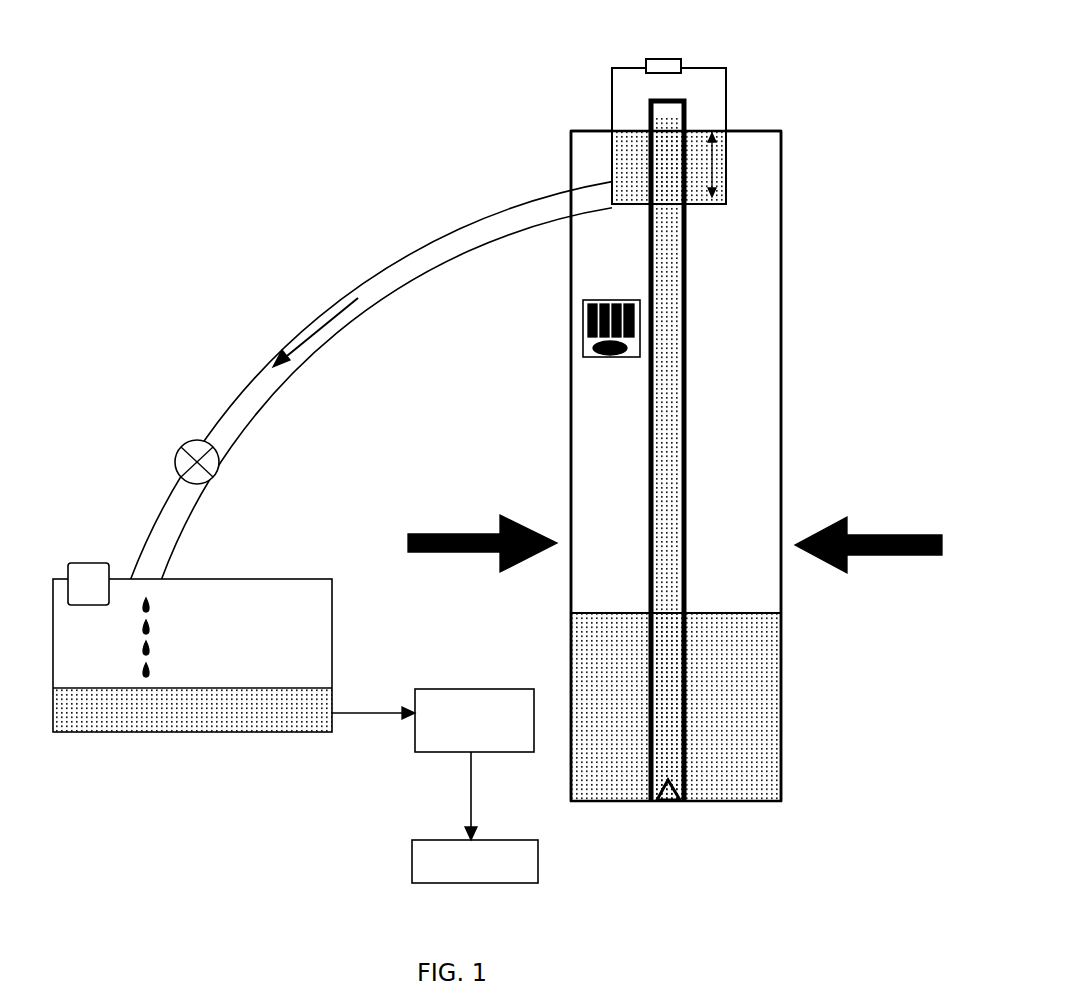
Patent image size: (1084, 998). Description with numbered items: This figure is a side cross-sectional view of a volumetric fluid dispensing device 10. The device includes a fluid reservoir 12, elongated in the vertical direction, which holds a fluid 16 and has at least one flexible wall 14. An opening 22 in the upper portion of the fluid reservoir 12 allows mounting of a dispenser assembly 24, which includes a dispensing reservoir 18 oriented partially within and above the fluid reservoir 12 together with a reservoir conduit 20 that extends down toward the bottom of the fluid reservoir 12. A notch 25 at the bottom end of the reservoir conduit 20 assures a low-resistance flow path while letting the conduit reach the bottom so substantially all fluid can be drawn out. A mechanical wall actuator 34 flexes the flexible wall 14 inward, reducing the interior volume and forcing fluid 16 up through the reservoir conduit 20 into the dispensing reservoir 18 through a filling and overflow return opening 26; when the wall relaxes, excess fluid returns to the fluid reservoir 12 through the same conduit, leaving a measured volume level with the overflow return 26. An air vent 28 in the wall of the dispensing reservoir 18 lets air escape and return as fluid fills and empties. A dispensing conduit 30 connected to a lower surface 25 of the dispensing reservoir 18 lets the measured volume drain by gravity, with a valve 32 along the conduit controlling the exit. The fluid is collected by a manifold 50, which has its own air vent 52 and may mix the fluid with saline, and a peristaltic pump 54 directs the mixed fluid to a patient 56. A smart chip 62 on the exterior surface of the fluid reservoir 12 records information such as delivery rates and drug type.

The volumetric fluid dispensing device 10 is at (506, 93).
The fluid reservoir 12 is at (752, 395).
The flexible wall 14 is at (570, 452).
The fluid 16 is at (752, 690).
The dispensing reservoir 18 is at (726, 165).
The reservoir conduit 20 is at (688, 310).
The opening 22 is at (727, 130).
The dispenser assembly 24 is at (605, 112).
The notch 25 is at (633, 197).
The filling and overflow return opening 26 is at (687, 118).
The air vent 28 is at (655, 57).
The dispensing conduit 30 is at (384, 299).
The valve 32 is at (220, 462).
The mechanical wall actuator 34 is at (465, 534).
The manifold 50 is at (178, 670).
The air vent 52 is at (75, 593).
The peristaltic pump 54 is at (460, 735).
The patient 56 is at (460, 876).
The smart chip 62 is at (583, 348).